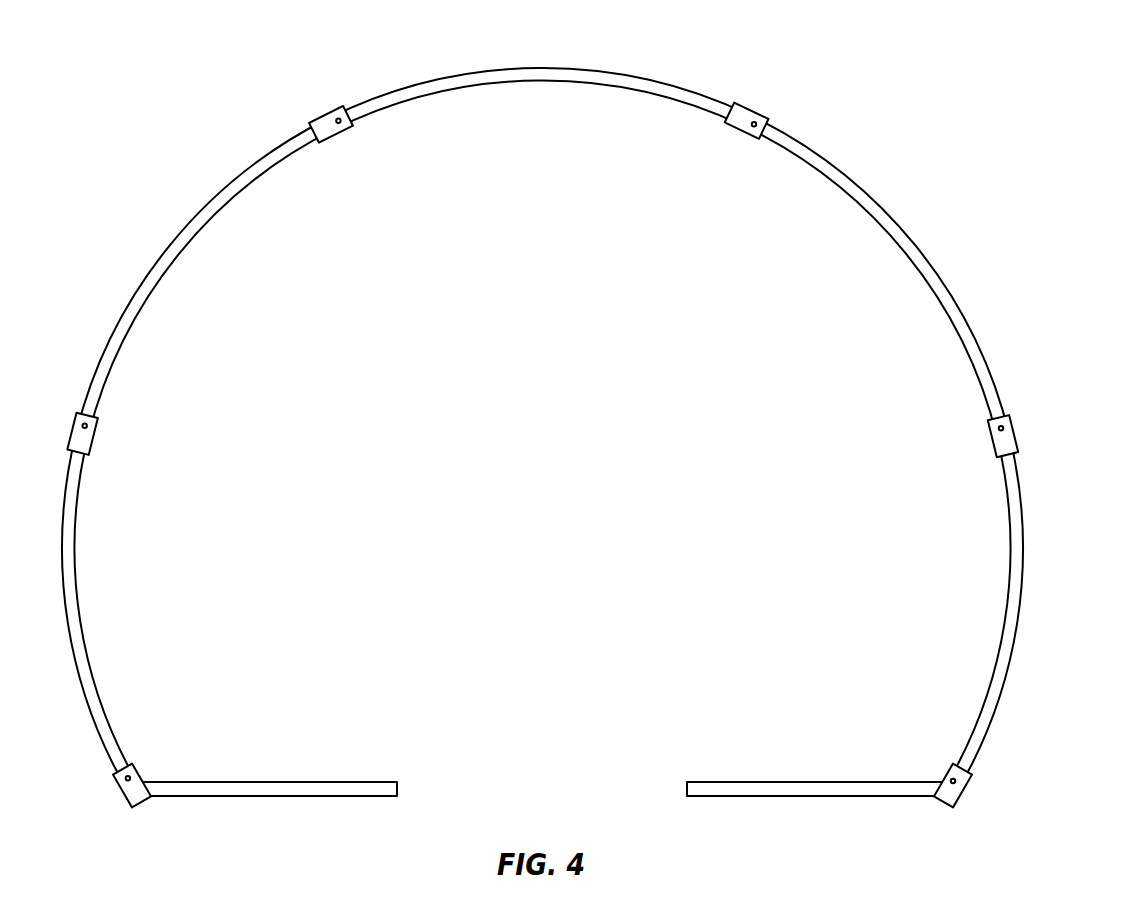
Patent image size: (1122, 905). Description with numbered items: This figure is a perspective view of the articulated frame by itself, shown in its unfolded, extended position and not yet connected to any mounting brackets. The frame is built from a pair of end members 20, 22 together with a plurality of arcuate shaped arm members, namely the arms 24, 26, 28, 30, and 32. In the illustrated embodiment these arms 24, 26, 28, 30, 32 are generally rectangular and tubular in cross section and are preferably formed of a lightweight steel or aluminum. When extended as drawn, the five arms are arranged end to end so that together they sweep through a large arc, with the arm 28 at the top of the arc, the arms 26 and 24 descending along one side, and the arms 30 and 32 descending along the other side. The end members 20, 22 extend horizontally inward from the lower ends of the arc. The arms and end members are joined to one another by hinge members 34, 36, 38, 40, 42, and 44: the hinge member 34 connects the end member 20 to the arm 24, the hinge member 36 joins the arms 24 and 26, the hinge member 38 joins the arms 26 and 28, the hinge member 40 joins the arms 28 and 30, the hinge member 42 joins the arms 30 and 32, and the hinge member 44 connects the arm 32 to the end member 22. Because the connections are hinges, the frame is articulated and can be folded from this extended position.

The end member 20 is at (796, 788).
The end member 22 is at (262, 792).
The arcuate shaped arm member 24 is at (1012, 618).
The arcuate shaped arm member 26 is at (927, 275).
The arcuate shaped arm member 28 is at (548, 72).
The arcuate shaped arm member 30 is at (172, 255).
The arcuate shaped arm member 32 is at (73, 602).
The hinge member 34 is at (952, 795).
The hinge member 36 is at (1003, 442).
The hinge member 38 is at (747, 115).
The hinge member 40 is at (331, 128).
The hinge member 42 is at (80, 438).
The hinge member 44 is at (140, 783).